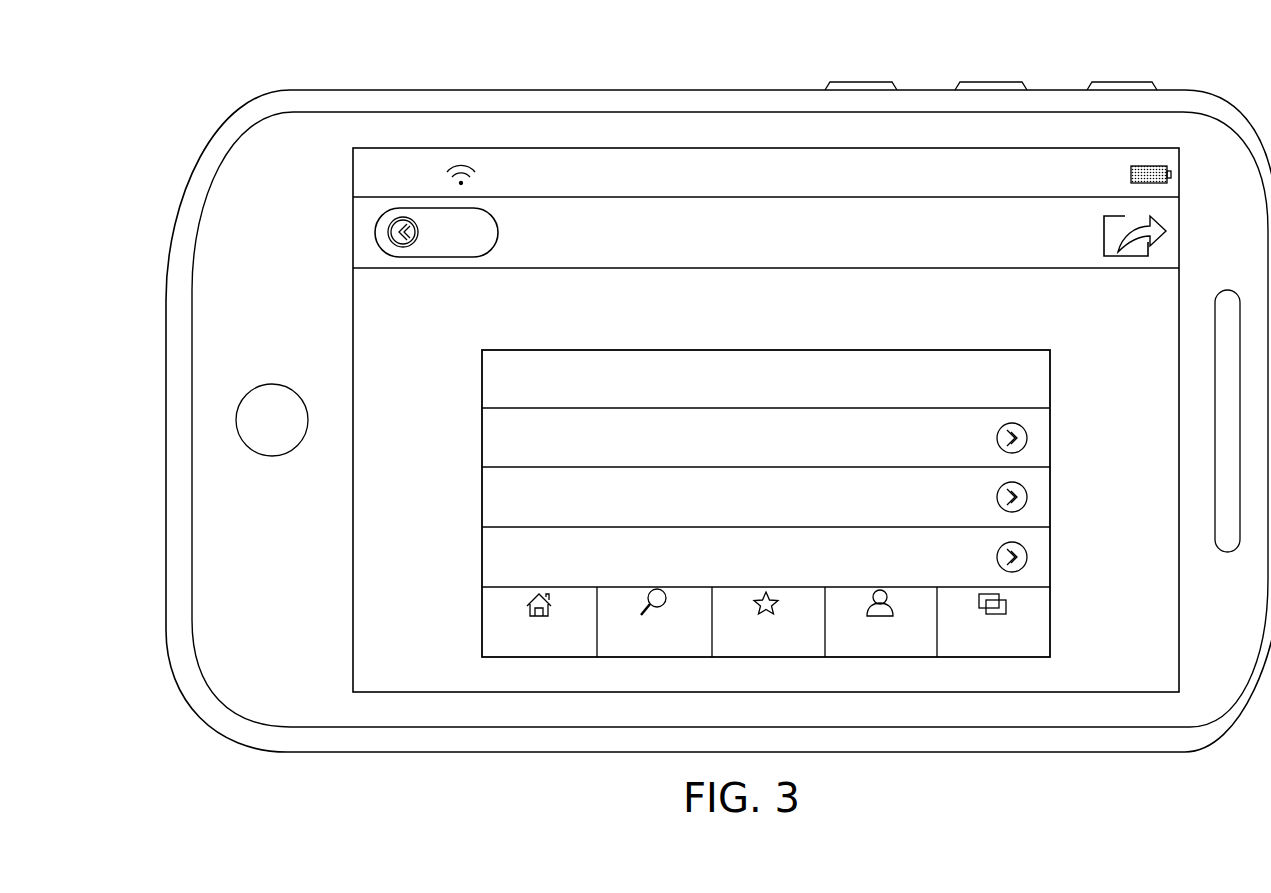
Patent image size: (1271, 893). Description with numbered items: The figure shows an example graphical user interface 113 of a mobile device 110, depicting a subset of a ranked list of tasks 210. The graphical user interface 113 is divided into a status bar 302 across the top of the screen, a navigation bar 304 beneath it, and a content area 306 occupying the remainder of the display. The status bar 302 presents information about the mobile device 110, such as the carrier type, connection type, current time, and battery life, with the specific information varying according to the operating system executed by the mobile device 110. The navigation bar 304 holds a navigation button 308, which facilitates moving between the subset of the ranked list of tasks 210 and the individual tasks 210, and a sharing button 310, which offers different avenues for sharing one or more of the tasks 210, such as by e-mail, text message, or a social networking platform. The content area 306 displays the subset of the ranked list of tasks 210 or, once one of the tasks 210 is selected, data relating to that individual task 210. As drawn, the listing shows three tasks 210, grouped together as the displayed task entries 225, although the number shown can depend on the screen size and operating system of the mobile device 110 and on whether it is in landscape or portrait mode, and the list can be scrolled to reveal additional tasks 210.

The mobile device 110 is at (387, 85).
The graphical user interface 113 is at (345, 335).
The status bar 302 is at (911, 157).
The navigation bar 304 is at (790, 245).
The content area 306 is at (790, 323).
The navigation button 308 is at (499, 233).
The sharing button 310 is at (1100, 238).
The tasks 210 is at (937, 356).
The worklist items 225 is at (474, 348).